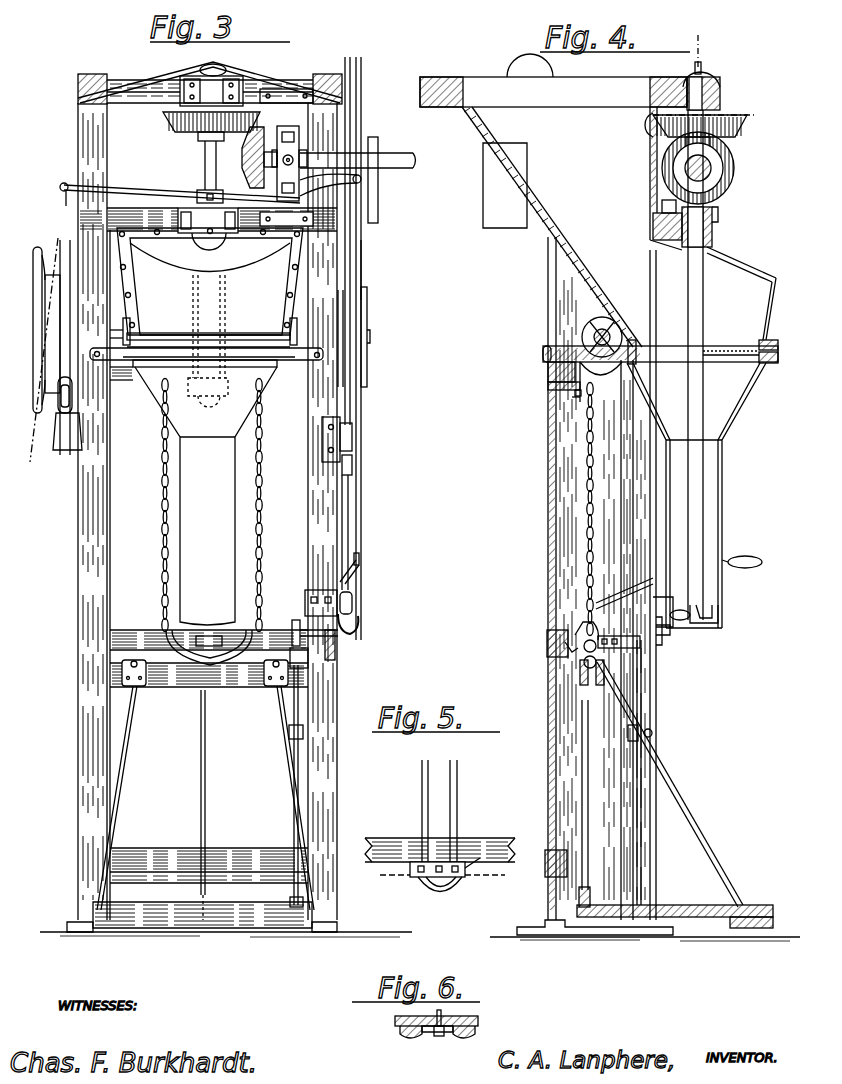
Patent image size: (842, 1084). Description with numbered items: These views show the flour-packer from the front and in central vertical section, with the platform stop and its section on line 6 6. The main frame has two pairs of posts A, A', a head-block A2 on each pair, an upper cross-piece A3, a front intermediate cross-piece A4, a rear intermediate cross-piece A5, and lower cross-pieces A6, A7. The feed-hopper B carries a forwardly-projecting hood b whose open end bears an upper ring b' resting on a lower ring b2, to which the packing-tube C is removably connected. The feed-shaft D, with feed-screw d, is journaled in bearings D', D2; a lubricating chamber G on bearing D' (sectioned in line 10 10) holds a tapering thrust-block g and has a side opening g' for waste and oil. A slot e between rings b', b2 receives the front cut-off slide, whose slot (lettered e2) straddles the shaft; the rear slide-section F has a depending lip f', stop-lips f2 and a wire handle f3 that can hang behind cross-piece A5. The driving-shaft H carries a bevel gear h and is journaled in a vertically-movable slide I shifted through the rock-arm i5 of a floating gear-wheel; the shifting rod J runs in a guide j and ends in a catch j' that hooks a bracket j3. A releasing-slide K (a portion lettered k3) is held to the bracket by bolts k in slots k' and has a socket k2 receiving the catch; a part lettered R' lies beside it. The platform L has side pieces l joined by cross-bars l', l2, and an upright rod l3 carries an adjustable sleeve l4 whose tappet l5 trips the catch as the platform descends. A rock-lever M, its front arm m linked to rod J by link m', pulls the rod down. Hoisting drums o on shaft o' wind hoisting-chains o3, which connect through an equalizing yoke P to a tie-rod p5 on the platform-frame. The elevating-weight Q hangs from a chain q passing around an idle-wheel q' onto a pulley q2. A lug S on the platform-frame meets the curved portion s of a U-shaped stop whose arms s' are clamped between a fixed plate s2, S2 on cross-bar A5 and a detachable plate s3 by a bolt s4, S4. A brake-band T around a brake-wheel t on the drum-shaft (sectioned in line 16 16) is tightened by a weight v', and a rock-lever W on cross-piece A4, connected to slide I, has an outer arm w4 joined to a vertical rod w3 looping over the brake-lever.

In FIG. 3, the post A is at (206, 511).
In FIG. 4, the post A is at (630, 585).
In FIG. 4, the post A' is at (562, 578).
In FIG. 3, the head-block A2 is at (92, 76).
In FIG. 3, the upper cross-piece A3 is at (118, 84).
In FIG. 4, the upper cross-piece A3 is at (660, 77).
In FIG. 3, the intermediate cross-piece A4 is at (208, 220).
In FIG. 4, the intermediate cross-piece A4 is at (652, 232).
In FIG. 3, the intermediate cross-piece A5 is at (126, 381).
In FIG. 4, the intermediate cross-piece A5 is at (548, 377).
In FIG. 5, the intermediate cross-piece A5 is at (380, 838).
In FIG. 3, the lower cross-piece A6 is at (124, 622).
In FIG. 4, the lower cross-piece A6 is at (546, 650).
In FIG. 3, the lower cross-piece A7 is at (166, 850).
In FIG. 4, the lower cross-piece A7 is at (545, 876).
In FIG. 3, the feed-hopper B is at (120, 124).
In FIG. 4, the feed-hopper B is at (553, 200).
In FIG. 3, the hood b is at (210, 317).
In FIG. 4, the hood b is at (741, 293).
In FIG. 3, the upper annular frame b' is at (208, 330).
In FIG. 4, the upper annular frame b' is at (779, 334).
In FIG. 3, the lower annular frame b2 is at (253, 370).
In FIG. 4, the lower annular frame b2 is at (770, 365).
In FIG. 3, the packing-tube C is at (206, 496).
In FIG. 4, the packing-tube C is at (704, 534).
In FIG. 4, the feed-shaft D is at (691, 365).
In FIG. 3, the upper bearing D' is at (211, 91).
In FIG. 4, the upper bearing D' is at (718, 93).
In FIG. 3, the lower bearing D2 is at (208, 229).
In FIG. 4, the lower bearing D2 is at (713, 232).
In FIG. 4, the feed-screw d is at (694, 607).
In FIG. 3, the slot e is at (160, 360).
In FIG. 4, the slot e is at (778, 352).
In FIG. 4, the bar bore e2 is at (736, 362).
In FIG. 4, the rear slide-section F is at (570, 346).
In FIG. 4, the downwardly-bent lip f' is at (619, 376).
In FIG. 4, the upwardly-projecting lips f2 is at (636, 342).
In FIG. 4, the handle f3 is at (556, 390).
In FIG. 3, the lubricating chamber G is at (202, 76).
In FIG. 4, the lubricating chamber G is at (663, 149).
In FIG. 4, the upwardly-tapering block g is at (691, 60).
In FIG. 3, the opening g' is at (231, 61).
In FIG. 4, the opening g' is at (717, 75).
In FIG. 3, the driving-shaft H is at (289, 140).
In FIG. 4, the driving-shaft H is at (705, 132).
In FIG. 3, the bevel gear-wheel h is at (293, 156).
In FIG. 4, the bevel gear-wheel h is at (736, 170).
In FIG. 3, the slide I is at (289, 154).
In FIG. 3, the rock-arm i5 is at (330, 185).
In FIG. 3, the actuating rod J is at (356, 265).
In FIG. 3, the guide j is at (348, 445).
In FIG. 3, the catch j' is at (358, 599).
In FIG. 3, the bracket j3 is at (312, 606).
In FIG. 3, the releasing-slide K is at (337, 648).
In FIG. 4, the bolts k is at (634, 602).
In FIG. 3, the slots k' is at (325, 661).
In FIG. 3, the cup or socket k2 is at (360, 626).
In FIG. 3, the latch bar k3 is at (291, 630).
In FIG. 3, the platform L is at (226, 919).
In FIG. 4, the platform L is at (660, 899).
In FIG. 3, the side pieces l is at (205, 798).
In FIG. 4, the side pieces l is at (670, 783).
In FIG. 3, the upper cross-bar l' is at (209, 684).
In FIG. 4, the upper cross-bar l' is at (592, 687).
In FIG. 3, the lower cross-bar l2 is at (225, 894).
In FIG. 4, the lower cross-bar l2 is at (590, 894).
In FIG. 3, the supporting-rod l3 is at (293, 834).
In FIG. 4, the supporting-rod l3 is at (642, 826).
In FIG. 3, the sleeve l4 is at (303, 740).
In FIG. 4, the sleeve l4 is at (633, 742).
In FIG. 4, the tappet l5 is at (652, 736).
In FIG. 3, the rock-lever M is at (356, 565).
In FIG. 4, the rock-lever M is at (764, 543).
In FIG. 4, the front arm m is at (742, 563).
In FIG. 3, the link m' is at (333, 532).
In FIG. 3, the hoisting drums o is at (207, 322).
In FIG. 4, the hoisting drums o is at (602, 333).
In FIG. 3, the shaft o' is at (107, 329).
In FIG. 4, the shaft o' is at (616, 323).
In FIG. 3, the hoisting-chains o3 is at (210, 505).
In FIG. 4, the hoisting-chains o3 is at (601, 509).
In FIG. 3, the equalizing lever or yoke P is at (209, 650).
In FIG. 4, the equalizing lever or yoke P is at (600, 642).
In FIG. 3, the tie-rod p5 is at (206, 756).
In FIG. 4, the tie-rod p5 is at (582, 790).
In FIG. 3, the platform-elevating weight Q is at (379, 210).
In FIG. 4, the platform-elevating weight Q is at (505, 185).
In FIG. 3, the lifting chain or band q is at (364, 241).
In FIG. 3, the idle-wheel q' is at (374, 347).
In FIG. 3, the drum or pulley q2 is at (370, 315).
In FIG. 4, the bracket R' is at (680, 639).
In FIG. 5, the lip or lug S is at (445, 892).
In FIG. 4, the arms s' is at (570, 405).
In FIG. 5, the arms s' is at (440, 817).
In FIG. 6, the arms s' is at (429, 1044).
In FIG. 6, the fixed plate S2 is at (398, 1016).
In FIG. 4, the fixed plate s2 is at (575, 394).
In FIG. 4, the detachable plate s3 is at (577, 402).
In FIG. 5, the detachable plate s3 is at (420, 880).
In FIG. 6, the detachable plate s3 is at (424, 1036).
In FIG. 5, the transverse bolt s4 is at (432, 892).
In FIG. 6, the transverse bolt s4 is at (442, 1038).
In FIG. 5, the transverse bolt S4 is at (479, 858).
In FIG. 4, the lower curved portion s is at (569, 675).
In FIG. 3, the brake-band T is at (48, 314).
In FIG. 3, the brake-wheel t is at (50, 286).
In FIG. 3, the weight v' is at (67, 413).
In FIG. 3, the rock-lever W is at (196, 172).
In FIG. 4, the rock-lever W is at (662, 200).
In FIG. 3, the vertical rod w3 is at (66, 204).
In FIG. 3, the outer arm w4 is at (118, 194).
In FIG. 5, the section line 6 is at (441, 875).
In FIG. 4, the section line 10 is at (770, 117).
In FIG. 3, the section line 16 is at (35, 352).